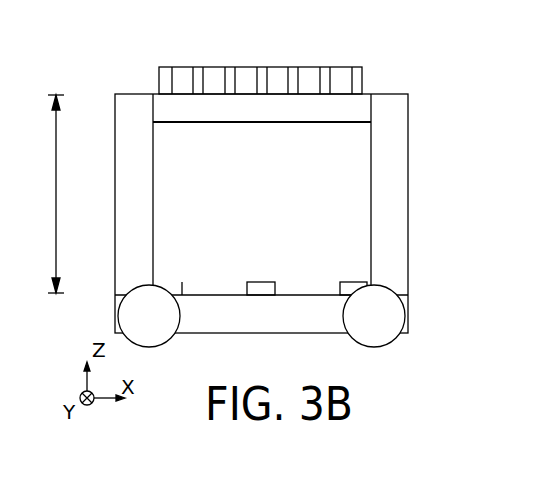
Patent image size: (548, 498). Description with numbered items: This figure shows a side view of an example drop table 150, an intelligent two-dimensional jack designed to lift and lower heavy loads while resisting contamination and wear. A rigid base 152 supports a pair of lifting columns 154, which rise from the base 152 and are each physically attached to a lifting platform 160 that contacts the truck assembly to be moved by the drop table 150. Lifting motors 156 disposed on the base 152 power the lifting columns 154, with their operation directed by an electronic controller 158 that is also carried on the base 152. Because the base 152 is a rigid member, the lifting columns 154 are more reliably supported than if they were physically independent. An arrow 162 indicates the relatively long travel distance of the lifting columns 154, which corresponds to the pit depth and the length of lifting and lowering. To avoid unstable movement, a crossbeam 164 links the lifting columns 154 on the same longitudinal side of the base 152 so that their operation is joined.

The drop table 150 is at (388, 32).
The base 152 is at (277, 323).
The lifting columns 154 is at (115, 130).
The lifting motors 156 is at (181, 270).
The electronic controller 158 is at (263, 281).
The lifting platform 160 is at (345, 60).
The arrow 162 is at (57, 220).
The crossbeam 164 is at (252, 123).